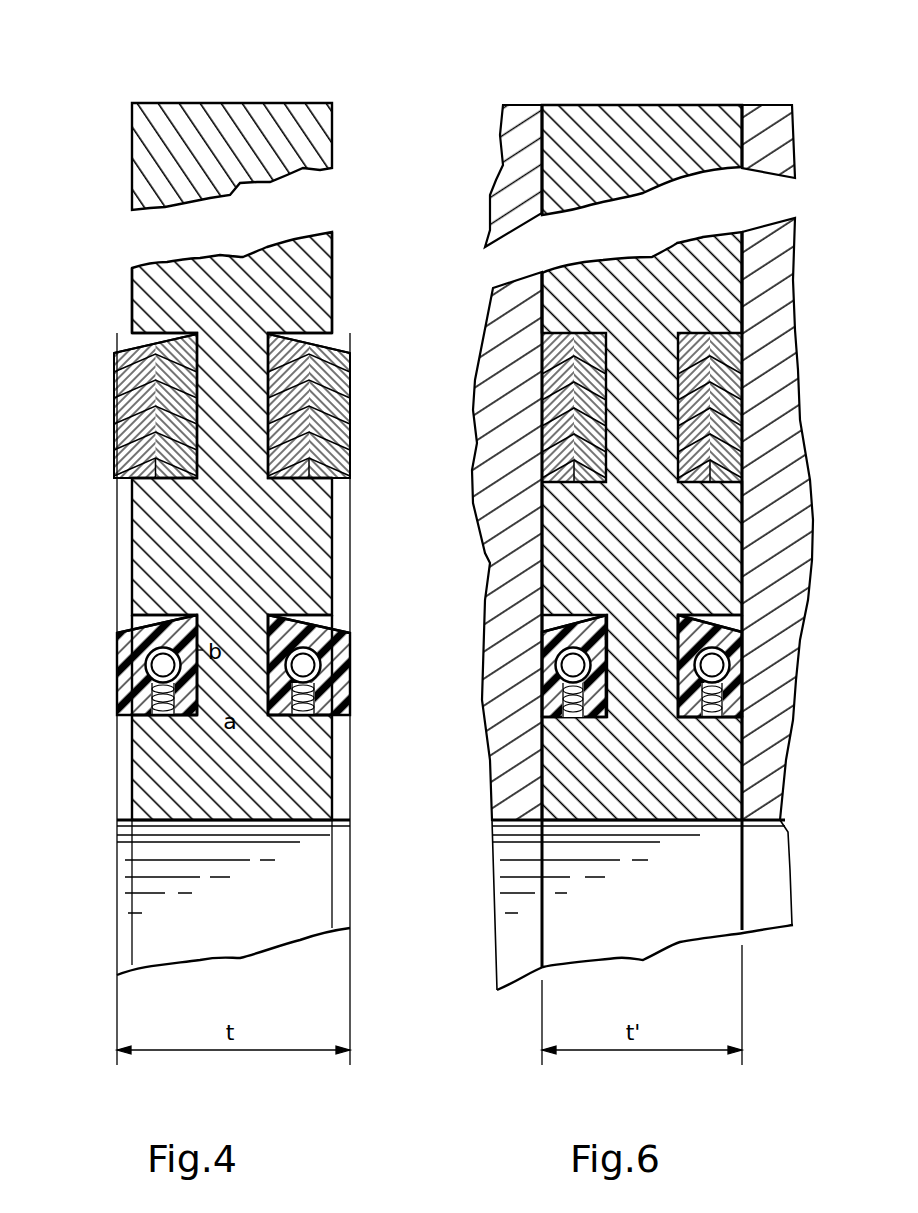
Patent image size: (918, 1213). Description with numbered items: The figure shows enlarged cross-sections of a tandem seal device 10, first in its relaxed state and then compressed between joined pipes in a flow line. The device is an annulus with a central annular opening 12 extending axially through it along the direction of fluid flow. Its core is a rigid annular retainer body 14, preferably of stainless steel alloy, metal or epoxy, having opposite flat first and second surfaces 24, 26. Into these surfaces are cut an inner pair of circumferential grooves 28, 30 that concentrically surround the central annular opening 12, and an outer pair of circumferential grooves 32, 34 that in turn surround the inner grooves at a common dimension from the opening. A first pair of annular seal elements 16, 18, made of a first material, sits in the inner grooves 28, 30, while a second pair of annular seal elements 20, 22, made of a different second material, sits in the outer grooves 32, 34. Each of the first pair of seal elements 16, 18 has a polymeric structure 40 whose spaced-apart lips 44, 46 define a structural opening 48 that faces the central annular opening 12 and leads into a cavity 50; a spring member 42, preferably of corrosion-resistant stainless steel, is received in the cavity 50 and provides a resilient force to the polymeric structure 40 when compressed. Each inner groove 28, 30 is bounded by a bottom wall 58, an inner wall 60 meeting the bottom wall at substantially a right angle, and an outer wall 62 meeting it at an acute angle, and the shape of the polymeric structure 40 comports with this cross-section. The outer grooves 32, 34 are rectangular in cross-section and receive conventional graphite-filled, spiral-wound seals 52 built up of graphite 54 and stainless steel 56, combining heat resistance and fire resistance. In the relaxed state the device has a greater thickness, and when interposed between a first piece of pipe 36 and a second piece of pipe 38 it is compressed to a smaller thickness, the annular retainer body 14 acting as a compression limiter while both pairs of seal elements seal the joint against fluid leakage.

In FIG. 4, the tandem seal device 10 is at (240, 75).
In FIG. 6, the tandem seal device 10 is at (603, 78).
In FIG. 4, the central annular opening 12 is at (213, 926).
In FIG. 6, the central annular opening 12 is at (610, 926).
In FIG. 4, the annular retainer body 14 is at (310, 262).
In FIG. 6, the annular retainer body 14 is at (680, 123).
In FIG. 4, the first annular seal element 16 is at (150, 668).
In FIG. 6, the first annular seal element 16 is at (572, 665).
In FIG. 4, the first annular seal element 18 is at (350, 682).
In FIG. 6, the first annular seal element 18 is at (742, 680).
In FIG. 4, the second annular seal element 20 is at (114, 410).
In FIG. 6, the second annular seal element 20 is at (545, 405).
In FIG. 4, the second annular seal element 22 is at (350, 394).
In FIG. 6, the second annular seal element 22 is at (750, 376).
In FIG. 4, the first surface 24 is at (132, 270).
In FIG. 6, the first surface 24 is at (540, 316).
In FIG. 4, the second surface 26 is at (332, 276).
In FIG. 6, the second surface 26 is at (752, 282).
In FIG. 4, the inner circumferential groove 28 is at (135, 712).
In FIG. 4, the inner circumferential groove 30 is at (345, 712).
In FIG. 6, the inner circumferential groove 30 is at (745, 712).
In FIG. 4, the outer circumferential groove 32 is at (142, 338).
In FIG. 4, the outer circumferential groove 34 is at (300, 338).
In FIG. 6, the first piece of pipe 36 is at (487, 136).
In FIG. 6, the second piece of pipe 38 is at (803, 111).
In FIG. 4, the polymeric structure 40 is at (125, 648).
In FIG. 6, the polymeric structure 40 is at (560, 645).
In FIG. 4, the spring member 42 is at (130, 630).
In FIG. 6, the spring member 42 is at (555, 620).
In FIG. 4, the lip 44 is at (150, 690).
In FIG. 6, the lip 44 is at (570, 681).
In FIG. 4, the lip 46 is at (165, 712).
In FIG. 6, the lip 46 is at (542, 735).
In FIG. 4, the structural opening 48 is at (160, 703).
In FIG. 6, the structural opening 48 is at (580, 697).
In FIG. 4, the cavity 50 is at (198, 674).
In FIG. 6, the cavity 50 is at (612, 700).
In FIG. 4, the spiral-wound seal 52 is at (114, 380).
In FIG. 4, the graphite 54 is at (268, 404).
In FIG. 6, the graphite 54 is at (642, 391).
In FIG. 4, the stainless steel 56 is at (268, 428).
In FIG. 6, the stainless steel 56 is at (642, 430).
In FIG. 4, the bottom wall 58 is at (197, 625).
In FIG. 6, the bottom wall 58 is at (665, 640).
In FIG. 4, the inner wall 60 is at (188, 718).
In FIG. 4, the outer wall 62 is at (117, 632).